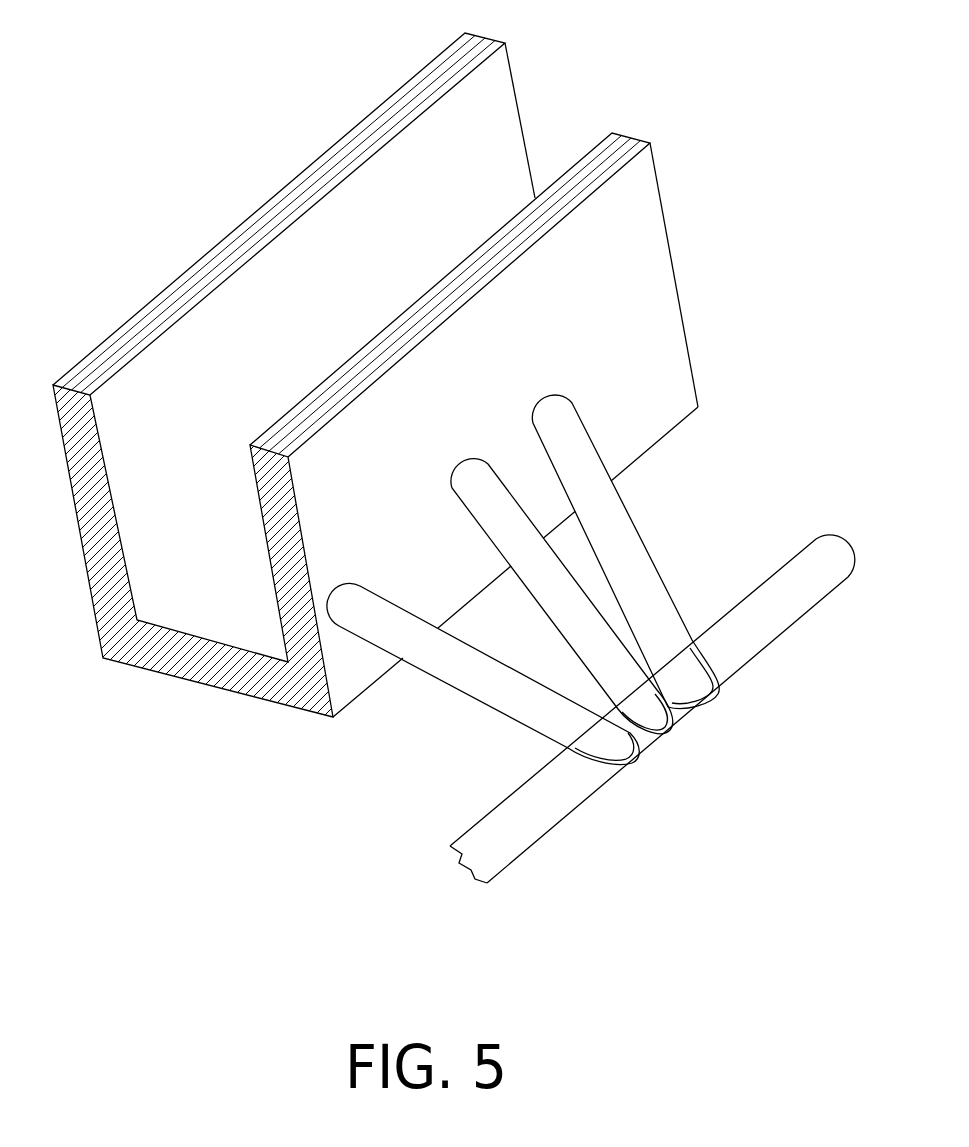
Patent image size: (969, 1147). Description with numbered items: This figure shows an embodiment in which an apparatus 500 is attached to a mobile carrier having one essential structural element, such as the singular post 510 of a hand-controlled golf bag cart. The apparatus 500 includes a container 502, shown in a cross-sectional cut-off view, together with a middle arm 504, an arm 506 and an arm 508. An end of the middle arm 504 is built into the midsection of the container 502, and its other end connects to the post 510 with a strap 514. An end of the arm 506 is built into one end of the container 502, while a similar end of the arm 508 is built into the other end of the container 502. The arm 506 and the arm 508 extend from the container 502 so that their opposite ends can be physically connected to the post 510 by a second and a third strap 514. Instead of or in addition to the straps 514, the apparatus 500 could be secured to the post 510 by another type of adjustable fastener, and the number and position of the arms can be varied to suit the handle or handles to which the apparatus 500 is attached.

The apparatus 500 is at (454, 458).
The container 502 is at (673, 267).
The middle arm 504 is at (559, 632).
The arm 506 is at (630, 514).
The arm 508 is at (440, 679).
The post 510 is at (557, 827).
The strap 514 is at (634, 765).